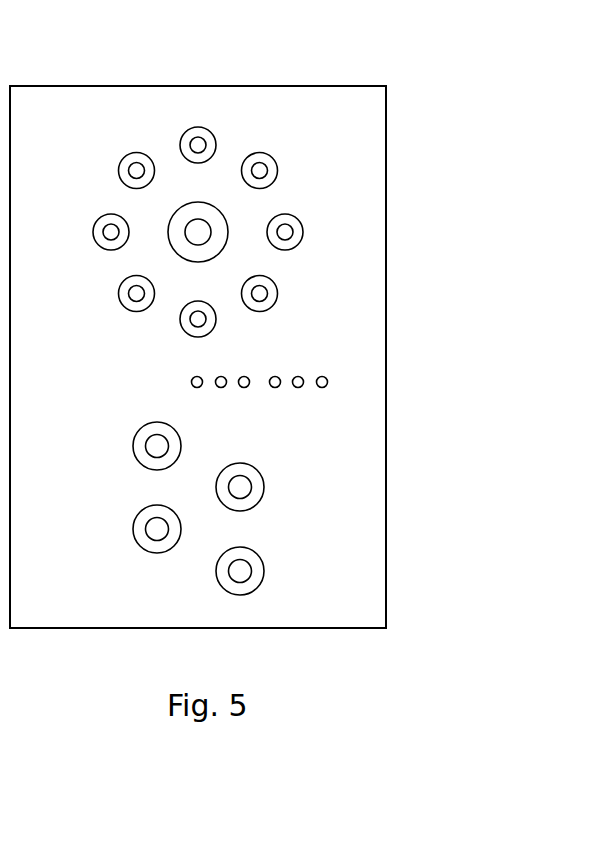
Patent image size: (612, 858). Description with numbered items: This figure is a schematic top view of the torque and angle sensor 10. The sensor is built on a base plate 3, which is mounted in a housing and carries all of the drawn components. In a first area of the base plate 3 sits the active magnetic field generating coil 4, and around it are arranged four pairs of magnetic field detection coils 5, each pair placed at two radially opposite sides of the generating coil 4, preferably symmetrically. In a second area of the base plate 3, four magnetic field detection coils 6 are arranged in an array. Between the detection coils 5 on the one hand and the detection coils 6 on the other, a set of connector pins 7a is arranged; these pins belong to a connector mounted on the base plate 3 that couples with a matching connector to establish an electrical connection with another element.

The torque and angle sensor 10 is at (400, 87).
The base plate 3 is at (375, 297).
The active magnetic field generating coil 4 is at (168, 223).
The magnetic field detection coils 5 is at (117, 298).
The magnetic field detection coil 6 is at (133, 533).
The connector pins 7a is at (298, 389).